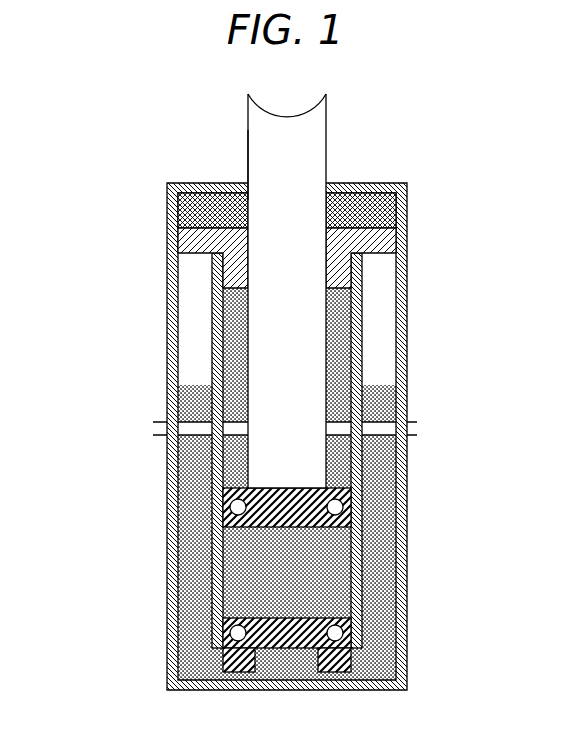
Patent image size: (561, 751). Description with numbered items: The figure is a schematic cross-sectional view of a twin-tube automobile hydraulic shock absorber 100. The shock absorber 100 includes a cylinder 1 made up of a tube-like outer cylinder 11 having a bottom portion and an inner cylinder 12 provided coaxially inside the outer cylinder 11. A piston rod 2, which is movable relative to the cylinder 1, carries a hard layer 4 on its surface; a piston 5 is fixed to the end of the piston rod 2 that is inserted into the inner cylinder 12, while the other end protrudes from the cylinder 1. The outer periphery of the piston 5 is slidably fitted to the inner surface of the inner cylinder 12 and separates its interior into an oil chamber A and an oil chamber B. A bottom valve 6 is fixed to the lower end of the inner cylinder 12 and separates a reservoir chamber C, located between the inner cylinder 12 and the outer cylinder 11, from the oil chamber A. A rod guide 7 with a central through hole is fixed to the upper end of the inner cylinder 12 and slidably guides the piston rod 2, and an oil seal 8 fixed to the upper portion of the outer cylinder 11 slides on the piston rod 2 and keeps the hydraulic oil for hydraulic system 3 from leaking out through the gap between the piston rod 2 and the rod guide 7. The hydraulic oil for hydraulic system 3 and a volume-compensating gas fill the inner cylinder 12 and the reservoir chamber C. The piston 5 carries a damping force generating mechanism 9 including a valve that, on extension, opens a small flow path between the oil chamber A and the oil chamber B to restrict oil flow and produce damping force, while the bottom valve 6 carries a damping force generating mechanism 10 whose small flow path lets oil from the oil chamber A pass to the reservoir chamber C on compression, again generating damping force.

The shock absorber 100 is at (130, 113).
The cylinder 1 is at (68, 315).
The piston rod 2 is at (313, 137).
The hydraulic oil for hydraulic system 3 is at (380, 465).
The hard layer 4 is at (248, 158).
The piston 5 is at (345, 518).
The bottom valve 6 is at (352, 655).
The rod guide 7 is at (383, 240).
The oil seal 8 is at (385, 208).
The damping force generating mechanism 9 is at (348, 505).
The damping force generating mechanism 10 is at (340, 633).
The outer cylinder 11 is at (167, 465).
The inner cylinder 12 is at (212, 352).
The oil chamber A is at (252, 577).
The oil chamber B is at (343, 405).
The reservoir chamber C is at (198, 521).